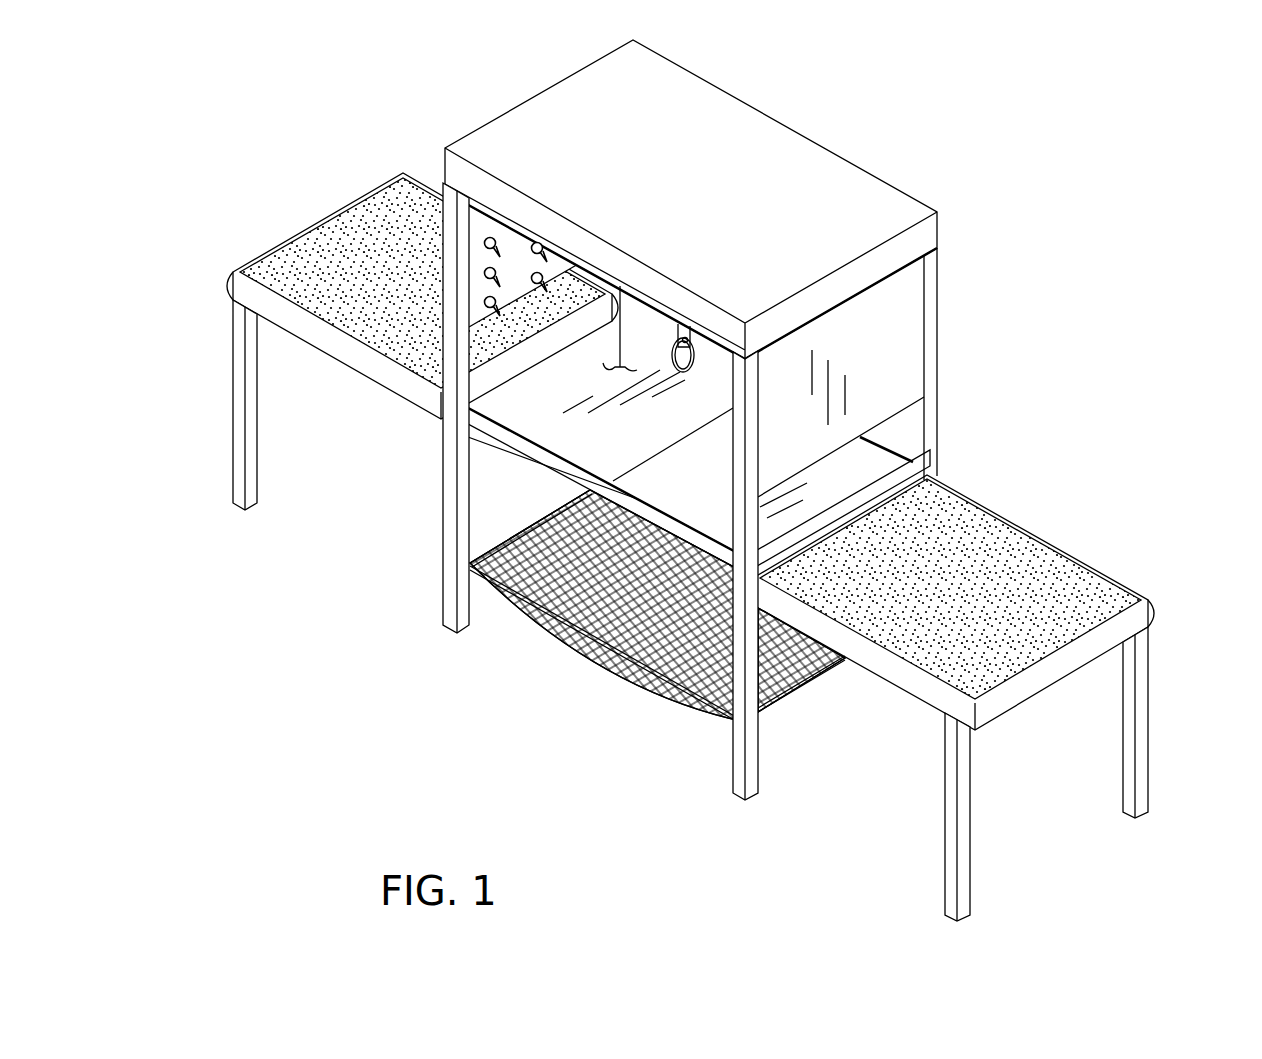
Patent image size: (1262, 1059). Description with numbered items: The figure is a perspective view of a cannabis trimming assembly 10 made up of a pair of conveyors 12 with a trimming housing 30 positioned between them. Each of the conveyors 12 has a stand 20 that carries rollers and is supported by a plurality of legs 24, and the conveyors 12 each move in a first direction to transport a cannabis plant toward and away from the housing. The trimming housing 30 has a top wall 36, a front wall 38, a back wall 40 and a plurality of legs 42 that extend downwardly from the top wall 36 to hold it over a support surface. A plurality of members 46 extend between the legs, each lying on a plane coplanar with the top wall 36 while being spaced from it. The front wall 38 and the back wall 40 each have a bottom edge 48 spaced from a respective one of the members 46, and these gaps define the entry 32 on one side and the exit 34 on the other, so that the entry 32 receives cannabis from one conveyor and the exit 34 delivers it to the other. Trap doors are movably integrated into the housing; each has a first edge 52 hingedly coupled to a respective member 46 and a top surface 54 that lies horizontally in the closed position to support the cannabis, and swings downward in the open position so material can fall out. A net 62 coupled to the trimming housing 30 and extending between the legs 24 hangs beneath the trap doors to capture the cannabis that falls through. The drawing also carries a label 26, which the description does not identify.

The cannabis trimming assembly 10 is at (1108, 147).
The conveyors 12 is at (673, 510).
The stand 20 is at (318, 342).
The legs 24 is at (243, 427).
The seat cushion 26 is at (312, 262).
The trimming housing 30 is at (721, 440).
The entry 32 is at (469, 450).
The exit 34 is at (850, 475).
The top wall 36 is at (880, 213).
The front wall 38 is at (514, 248).
The back wall 40 is at (902, 332).
The legs 42 is at (450, 587).
The members 46 is at (587, 505).
The bottom edge 48 is at (520, 327).
The first edge 52 is at (588, 350).
The top surface 54 is at (620, 275).
The net 62 is at (625, 677).